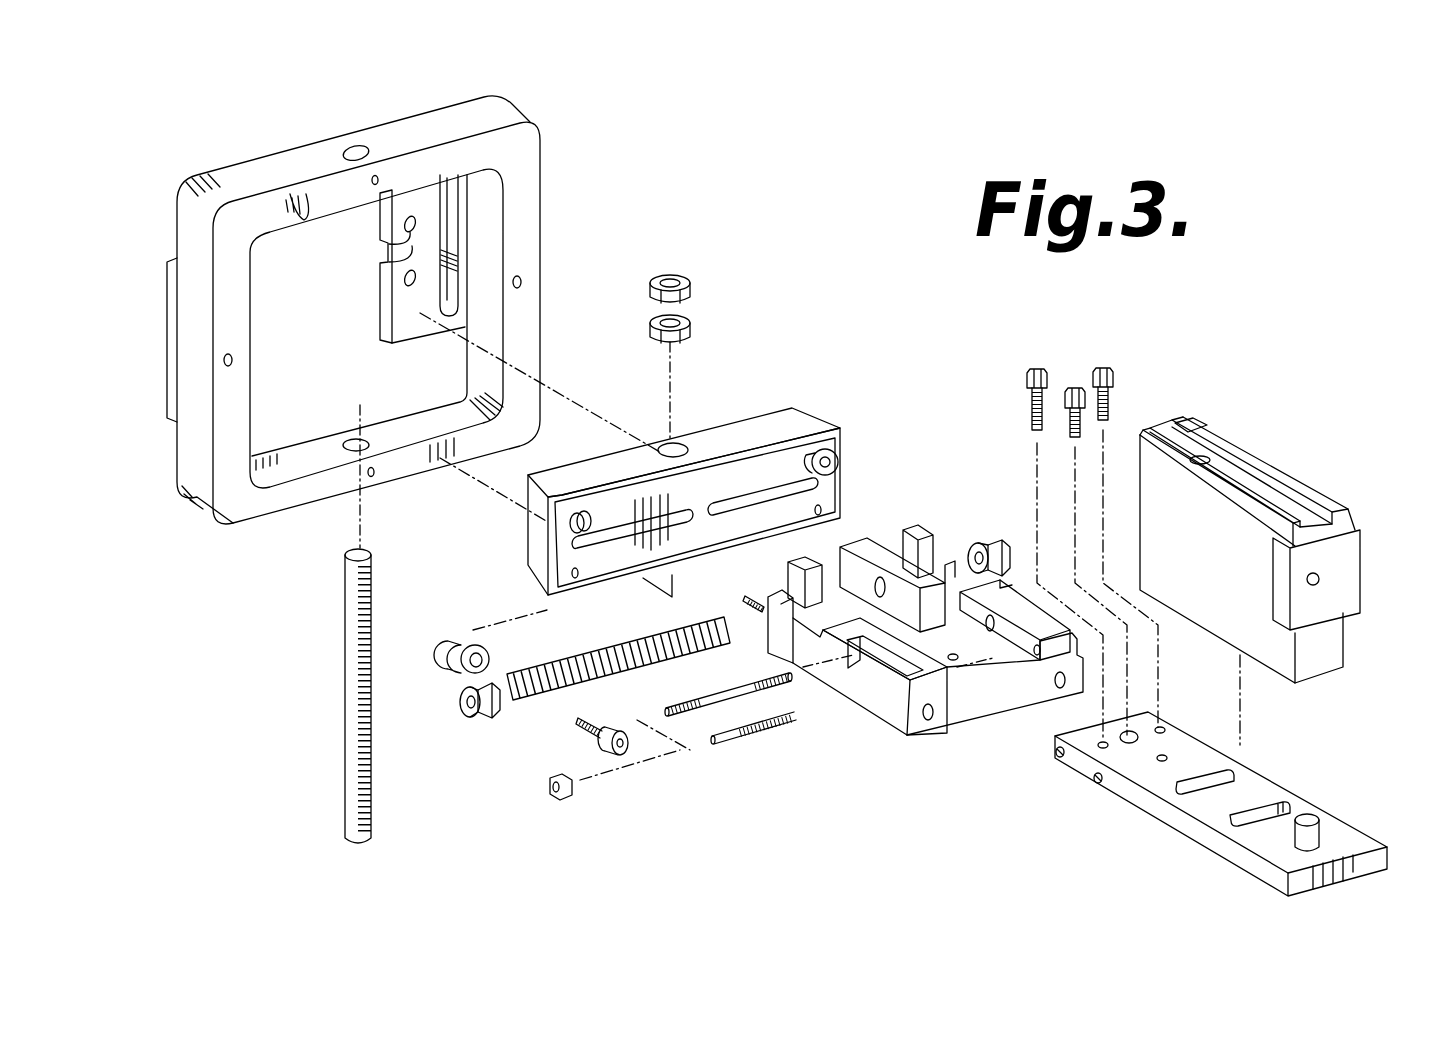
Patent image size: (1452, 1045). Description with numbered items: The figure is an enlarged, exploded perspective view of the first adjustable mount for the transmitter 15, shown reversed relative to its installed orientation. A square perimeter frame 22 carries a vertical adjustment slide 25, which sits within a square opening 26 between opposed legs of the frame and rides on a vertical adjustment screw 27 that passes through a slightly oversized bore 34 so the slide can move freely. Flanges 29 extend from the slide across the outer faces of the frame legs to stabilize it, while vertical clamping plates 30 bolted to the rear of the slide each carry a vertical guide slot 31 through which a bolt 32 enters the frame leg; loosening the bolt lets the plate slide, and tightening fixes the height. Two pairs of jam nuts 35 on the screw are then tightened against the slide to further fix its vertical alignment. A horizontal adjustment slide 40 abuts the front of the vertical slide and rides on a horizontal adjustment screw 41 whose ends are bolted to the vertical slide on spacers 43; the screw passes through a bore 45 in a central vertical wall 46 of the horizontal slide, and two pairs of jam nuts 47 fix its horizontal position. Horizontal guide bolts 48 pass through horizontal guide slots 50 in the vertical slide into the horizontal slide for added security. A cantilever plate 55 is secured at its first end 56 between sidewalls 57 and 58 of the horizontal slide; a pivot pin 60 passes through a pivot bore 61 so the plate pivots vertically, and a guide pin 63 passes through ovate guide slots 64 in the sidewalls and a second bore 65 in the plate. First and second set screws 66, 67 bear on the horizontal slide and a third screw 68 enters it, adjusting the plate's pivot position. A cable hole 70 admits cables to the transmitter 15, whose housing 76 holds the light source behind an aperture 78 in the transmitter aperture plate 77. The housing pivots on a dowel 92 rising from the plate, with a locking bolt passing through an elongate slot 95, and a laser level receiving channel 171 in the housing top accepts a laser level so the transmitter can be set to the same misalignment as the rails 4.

The rail 4 is at (182, 104).
The transmitter 15 is at (1282, 470).
The perimeter frame 22 is at (490, 107).
The vertical adjustment slide 25 is at (795, 406).
The square opening 26 is at (304, 208).
The vertical adjustment screw 27 is at (345, 636).
The flanges 29 is at (840, 424).
The vertical clamping plate 30 is at (256, 292).
The guide slot 31 is at (455, 300).
The bolt 32 is at (458, 256).
The bore 34 is at (676, 446).
The jam nuts 35 is at (692, 322).
The horizontal adjustment slide 40 is at (882, 722).
The horizontal adjustment screw 41 is at (604, 652).
The spacers 43 is at (846, 462).
The bore 45 is at (880, 585).
The wall 46 is at (858, 545).
The jam nuts 47 is at (482, 718).
The horizontal guide bolt 48 is at (744, 598).
The horizontal guide slots 50 is at (720, 520).
The cantilever plate 55 is at (1368, 874).
The first end 56 is at (1152, 704).
The sidewall 57 is at (940, 688).
The sidewall 58 is at (990, 597).
The pivot pin 60 is at (782, 724).
The pivot bore 61 is at (1102, 785).
The guide pin 63 is at (688, 702).
The ovate guide slots 64 is at (870, 662).
The second bore 65 is at (1062, 762).
The first set screw 66 is at (1028, 372).
The second set screw 67 is at (1108, 370).
The third screw 68 is at (1073, 390).
The cable hole 70 is at (1262, 800).
The transmitter housing 76 is at (1196, 536).
The transmitter aperture plate 77 is at (1362, 590).
The aperture 78 is at (1312, 585).
The pivot pin or dowel 92 is at (1300, 840).
The elongate slot 95 is at (1185, 795).
The laser level receiving channel 171 is at (1197, 447).